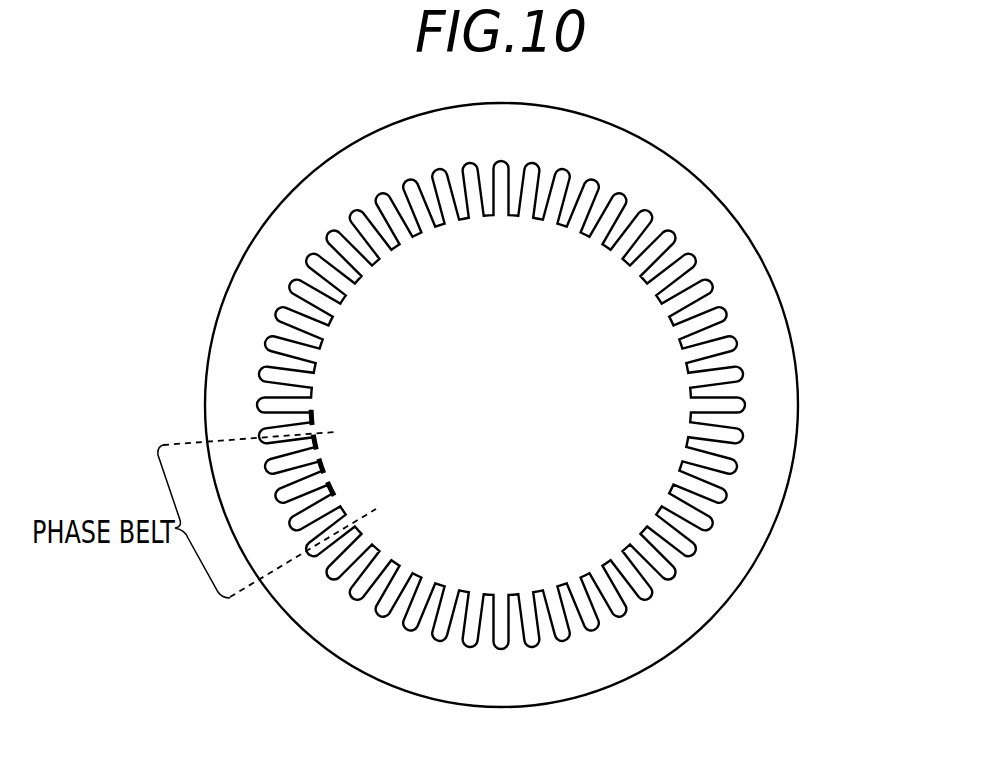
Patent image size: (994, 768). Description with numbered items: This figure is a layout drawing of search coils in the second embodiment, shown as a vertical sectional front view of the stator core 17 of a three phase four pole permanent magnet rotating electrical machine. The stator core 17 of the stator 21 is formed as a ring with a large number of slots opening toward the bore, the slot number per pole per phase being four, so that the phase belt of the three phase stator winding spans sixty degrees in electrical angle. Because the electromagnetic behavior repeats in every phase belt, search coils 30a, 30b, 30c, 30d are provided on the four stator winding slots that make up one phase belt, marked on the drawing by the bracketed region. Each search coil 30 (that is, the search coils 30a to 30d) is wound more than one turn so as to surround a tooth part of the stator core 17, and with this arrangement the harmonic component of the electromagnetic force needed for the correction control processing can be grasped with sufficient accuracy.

The stator core 17 is at (685, 215).
The stator 21 is at (822, 300).
The search coil 30 is at (416, 442).
The search coil 30a is at (318, 420).
The search coil 30b is at (322, 445).
The search coil 30c is at (327, 467).
The search coil 30d is at (390, 500).